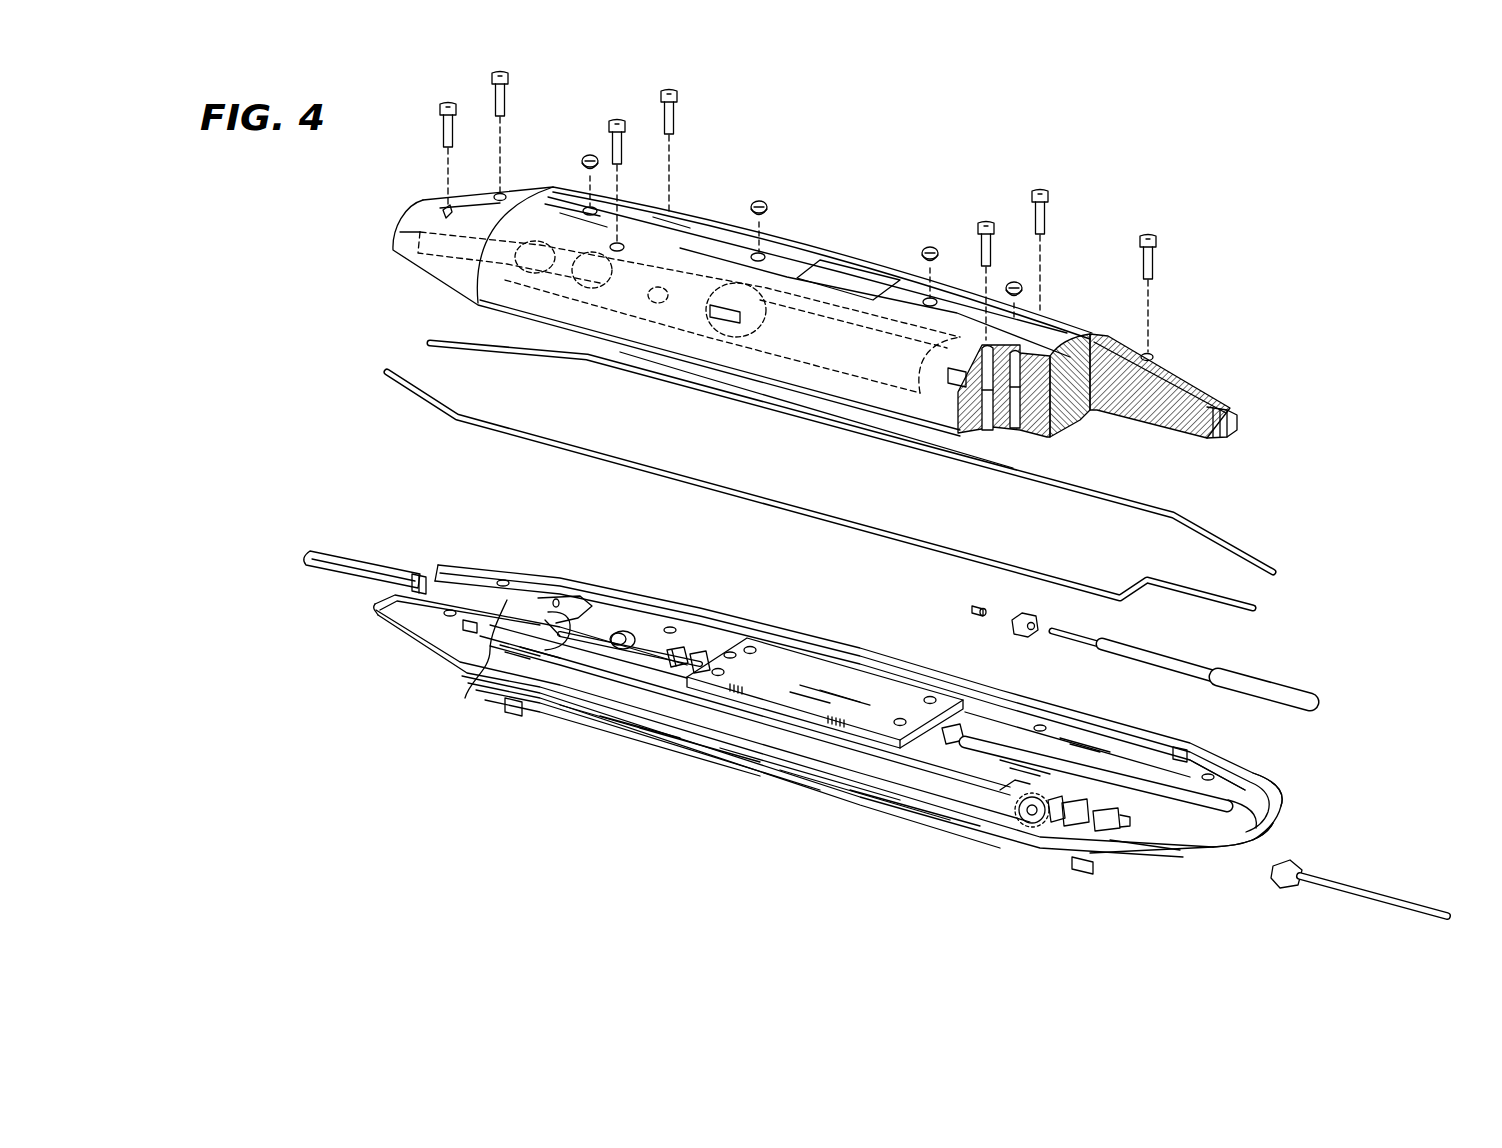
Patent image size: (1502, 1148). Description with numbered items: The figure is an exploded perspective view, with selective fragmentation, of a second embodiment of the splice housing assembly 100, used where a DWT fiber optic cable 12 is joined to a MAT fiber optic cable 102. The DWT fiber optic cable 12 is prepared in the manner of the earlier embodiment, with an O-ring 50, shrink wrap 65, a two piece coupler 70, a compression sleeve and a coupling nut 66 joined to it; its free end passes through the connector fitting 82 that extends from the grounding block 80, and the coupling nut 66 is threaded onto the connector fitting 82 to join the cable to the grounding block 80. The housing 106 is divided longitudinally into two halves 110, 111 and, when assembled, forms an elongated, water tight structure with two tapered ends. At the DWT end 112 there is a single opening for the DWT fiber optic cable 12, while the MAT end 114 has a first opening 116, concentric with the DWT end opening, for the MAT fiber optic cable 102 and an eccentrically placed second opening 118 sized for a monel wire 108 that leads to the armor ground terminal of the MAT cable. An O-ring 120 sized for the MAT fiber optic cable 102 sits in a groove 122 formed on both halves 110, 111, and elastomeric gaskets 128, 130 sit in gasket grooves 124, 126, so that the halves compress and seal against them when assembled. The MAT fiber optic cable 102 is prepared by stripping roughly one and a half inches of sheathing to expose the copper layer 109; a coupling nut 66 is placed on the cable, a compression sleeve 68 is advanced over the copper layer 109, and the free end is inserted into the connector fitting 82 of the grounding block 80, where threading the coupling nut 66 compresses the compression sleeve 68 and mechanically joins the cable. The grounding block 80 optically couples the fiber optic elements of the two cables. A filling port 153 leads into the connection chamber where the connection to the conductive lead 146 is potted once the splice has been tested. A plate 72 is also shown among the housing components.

The DWT fiber optic cable 12 is at (330, 578).
The O-ring 50 is at (412, 576).
The shrink wrap 65 is at (620, 630).
The coupling nut 66 is at (685, 648).
The compression sleeve 68 is at (977, 608).
The two piece coupler 70 is at (473, 677).
The rail plate 72 is at (515, 583).
The grounding block 80 is at (870, 683).
The connector fitting 82 is at (705, 660).
The splice housing assembly 100 is at (1012, 125).
The MAT fiber optic cable 102 is at (1285, 682).
The housing 106 is at (800, 240).
The monel wire 108 is at (1377, 887).
The copper layer 109 is at (1080, 640).
The housing half 110 is at (700, 237).
The housing half 111 is at (672, 742).
The DWT end 112 is at (410, 208).
The MAT end 114 is at (1227, 413).
The first opening 116 is at (1283, 813).
The second opening 118 is at (1160, 838).
The O-ring 120 is at (1226, 672).
The groove 122 is at (1252, 777).
The gasket groove 124 is at (1282, 802).
The gasket groove 126 is at (1243, 813).
The elastomeric gasket 128 is at (1178, 514).
The elastomeric gasket 130 is at (596, 451).
The conductive lead 146 is at (553, 632).
The filling port 153 is at (1015, 430).